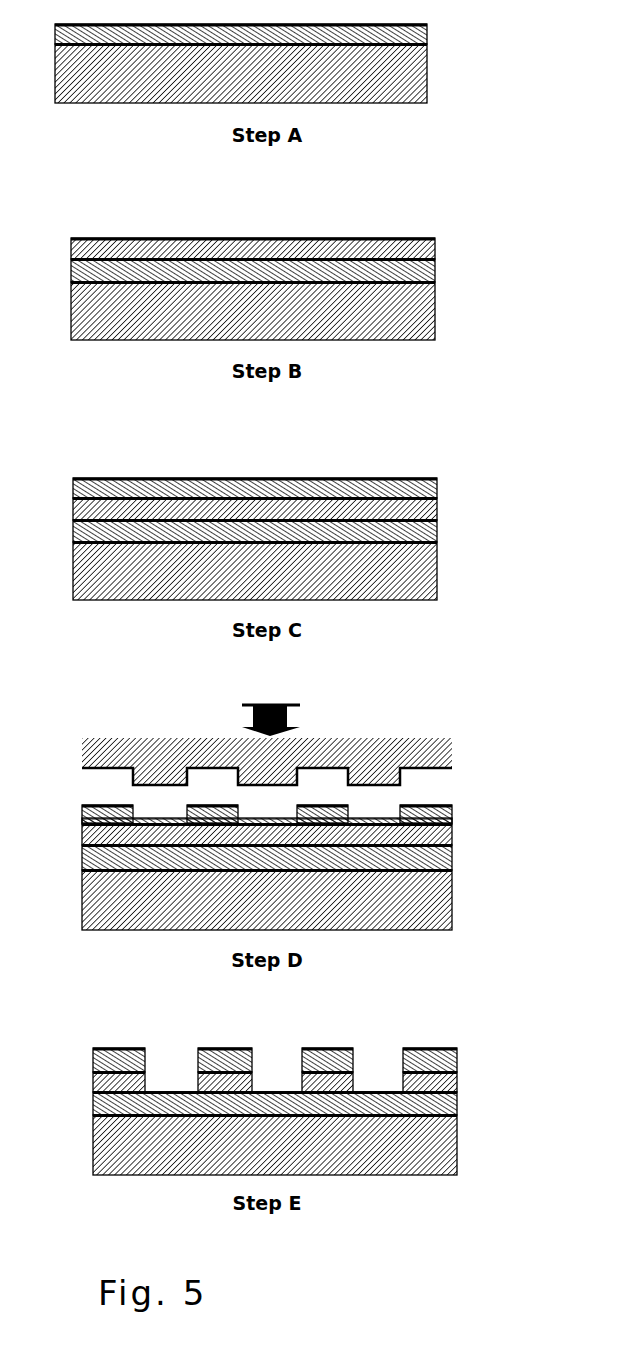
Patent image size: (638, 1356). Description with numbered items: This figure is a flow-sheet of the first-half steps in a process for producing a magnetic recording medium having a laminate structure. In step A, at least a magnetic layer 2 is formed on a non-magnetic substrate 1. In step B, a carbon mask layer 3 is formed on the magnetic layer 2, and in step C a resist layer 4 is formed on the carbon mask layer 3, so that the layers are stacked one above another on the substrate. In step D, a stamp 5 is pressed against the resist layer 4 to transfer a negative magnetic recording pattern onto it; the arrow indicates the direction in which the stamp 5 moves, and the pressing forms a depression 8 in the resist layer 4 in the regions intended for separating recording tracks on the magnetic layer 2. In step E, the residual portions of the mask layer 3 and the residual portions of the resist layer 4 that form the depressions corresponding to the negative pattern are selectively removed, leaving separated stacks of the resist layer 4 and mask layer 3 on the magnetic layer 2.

The non-magnetic substrate 1 is at (430, 80).
The magnetic layer 2 is at (430, 37).
The carbon mask layer 3 is at (437, 252).
The resist layer 4 is at (440, 490).
The stamp 5 is at (455, 757).
The depression 8 is at (375, 821).